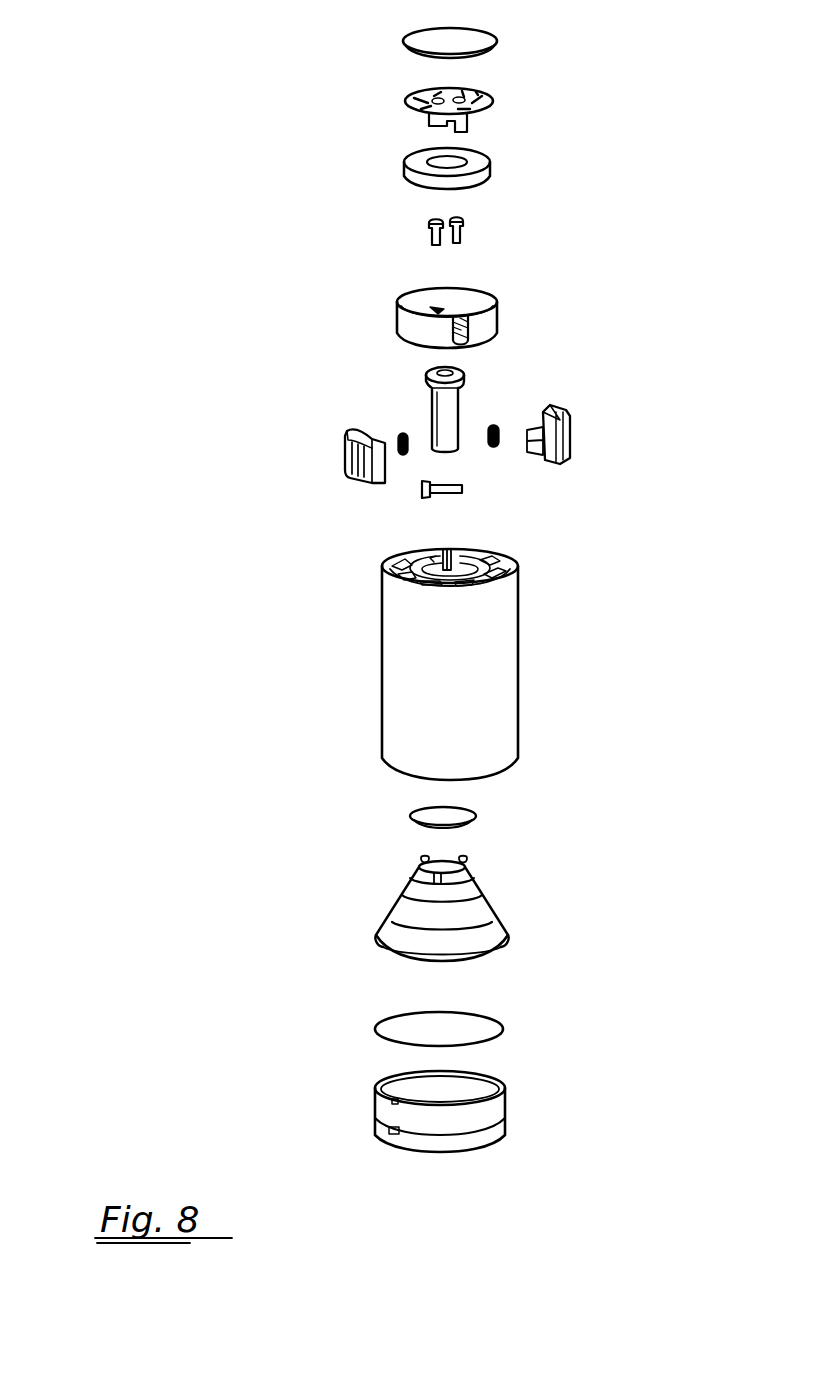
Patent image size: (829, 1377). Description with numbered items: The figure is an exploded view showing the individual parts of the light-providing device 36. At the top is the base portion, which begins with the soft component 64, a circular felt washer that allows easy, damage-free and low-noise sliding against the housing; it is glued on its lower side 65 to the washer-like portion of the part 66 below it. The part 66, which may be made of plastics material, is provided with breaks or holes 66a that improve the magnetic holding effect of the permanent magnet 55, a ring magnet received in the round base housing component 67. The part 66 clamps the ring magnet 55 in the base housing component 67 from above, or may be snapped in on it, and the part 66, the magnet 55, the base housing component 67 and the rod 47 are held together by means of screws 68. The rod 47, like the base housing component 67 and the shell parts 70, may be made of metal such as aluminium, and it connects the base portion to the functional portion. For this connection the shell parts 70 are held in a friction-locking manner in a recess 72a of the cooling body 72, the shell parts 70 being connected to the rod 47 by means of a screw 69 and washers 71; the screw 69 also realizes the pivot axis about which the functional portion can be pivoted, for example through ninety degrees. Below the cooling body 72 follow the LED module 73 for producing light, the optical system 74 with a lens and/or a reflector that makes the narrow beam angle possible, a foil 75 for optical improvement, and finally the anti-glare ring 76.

The light-providing device 36 is at (126, 70).
The soft component 64 is at (496, 37).
The lower side 65 is at (492, 50).
The part 66 is at (400, 107).
The breaks or holes 66a is at (426, 97).
The permanent magnet 55 is at (499, 166).
The screws 68 is at (428, 242).
The base housing component 67 is at (492, 322).
The rod 47 is at (455, 407).
The washers 71 is at (405, 434).
The shell parts 70 is at (366, 478).
The screw 69 is at (466, 489).
The cooling body 72 is at (516, 650).
The recess 72a is at (450, 556).
The LED module 73 is at (476, 813).
The optical system 74 is at (484, 910).
The foil 75 is at (494, 1025).
The anti-glare ring 76 is at (497, 1109).